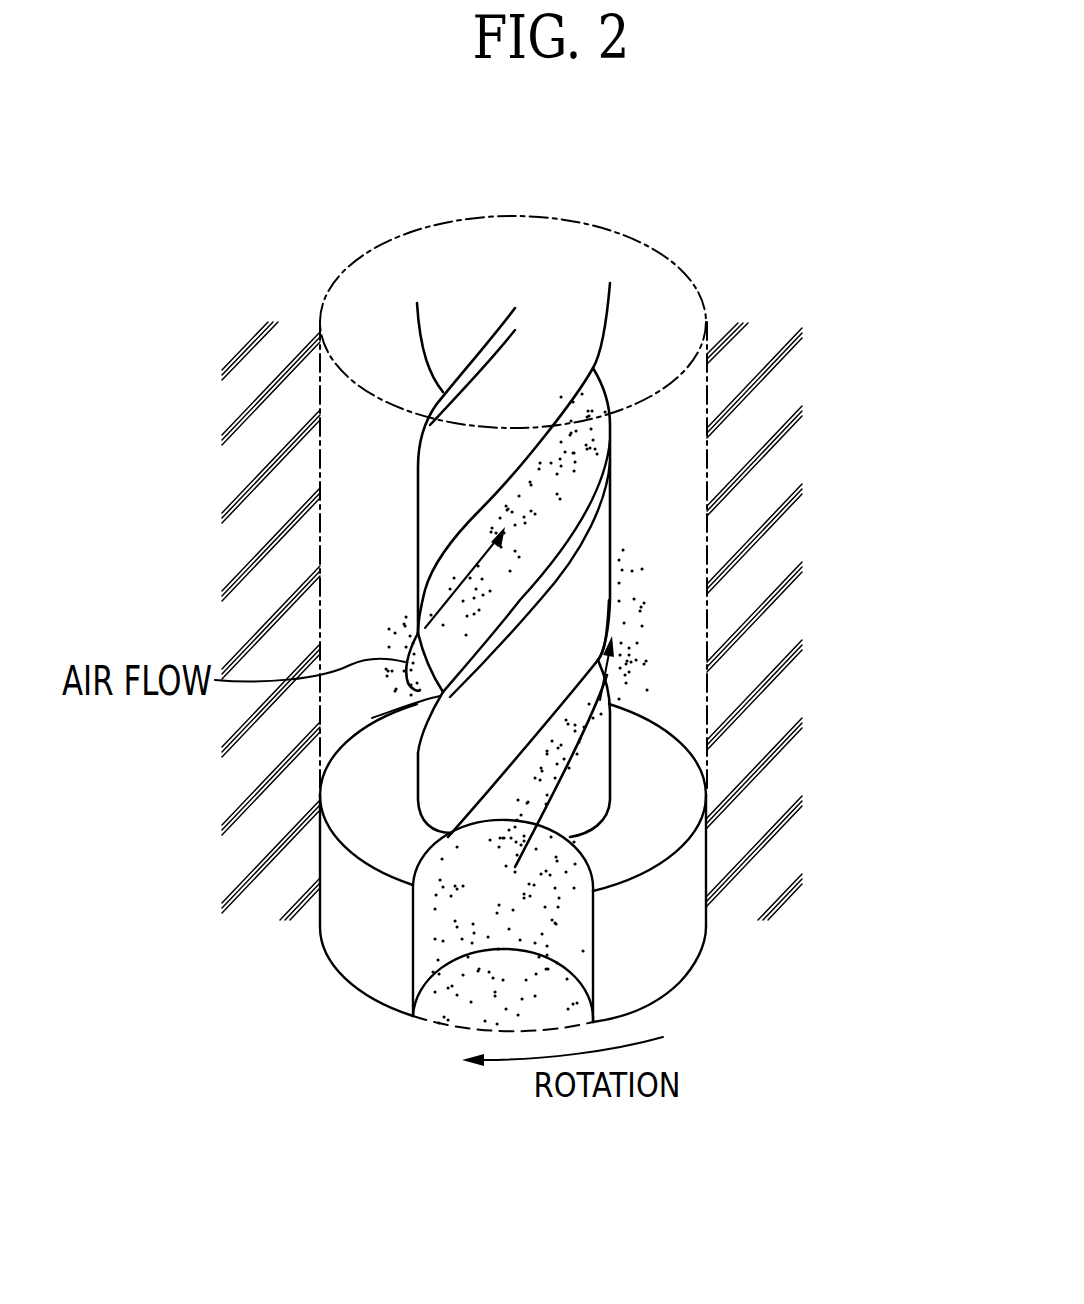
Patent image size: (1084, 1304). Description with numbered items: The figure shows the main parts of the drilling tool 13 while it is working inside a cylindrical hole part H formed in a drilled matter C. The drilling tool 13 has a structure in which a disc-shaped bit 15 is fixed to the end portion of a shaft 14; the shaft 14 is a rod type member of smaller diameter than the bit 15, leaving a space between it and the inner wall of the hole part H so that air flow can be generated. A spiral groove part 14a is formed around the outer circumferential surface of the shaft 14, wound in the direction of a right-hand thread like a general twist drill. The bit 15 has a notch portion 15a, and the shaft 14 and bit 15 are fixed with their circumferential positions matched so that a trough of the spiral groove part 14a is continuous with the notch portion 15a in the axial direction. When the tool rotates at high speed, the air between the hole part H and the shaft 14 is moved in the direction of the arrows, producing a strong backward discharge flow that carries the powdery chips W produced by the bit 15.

The hole part H is at (358, 287).
The powdery chips W is at (348, 707).
The drilling tool 13 is at (693, 490).
The drilled matter C is at (790, 740).
The shaft 14 is at (446, 511).
The spiral groove part 14a is at (563, 447).
The bit 15 is at (682, 956).
The notch portion 15a is at (423, 950).